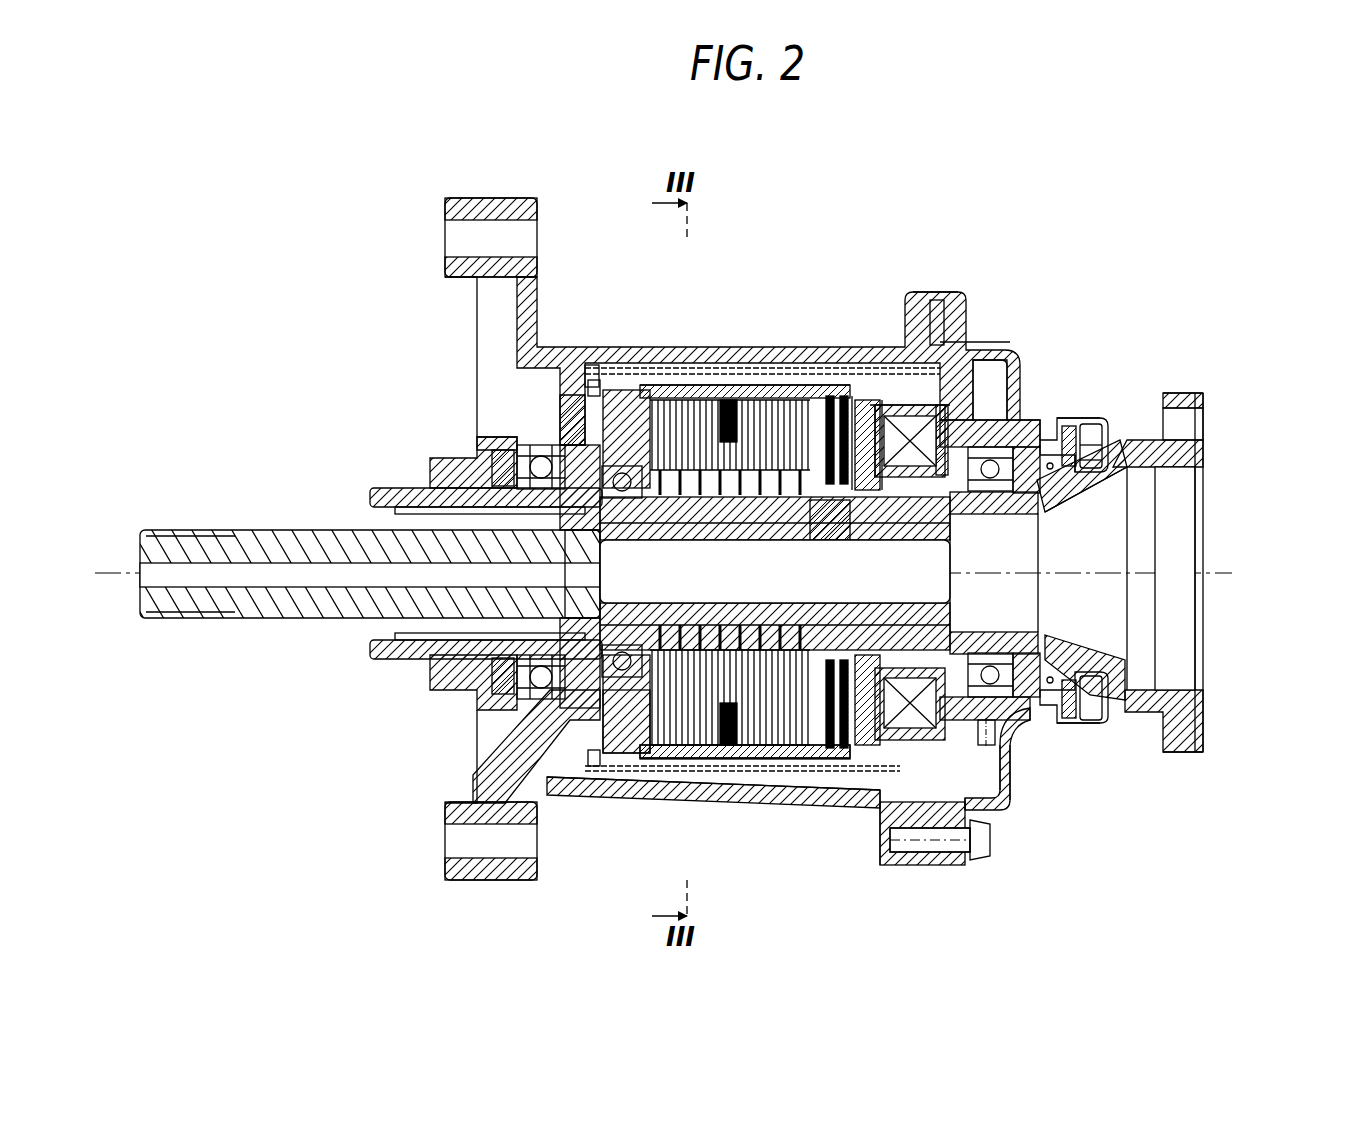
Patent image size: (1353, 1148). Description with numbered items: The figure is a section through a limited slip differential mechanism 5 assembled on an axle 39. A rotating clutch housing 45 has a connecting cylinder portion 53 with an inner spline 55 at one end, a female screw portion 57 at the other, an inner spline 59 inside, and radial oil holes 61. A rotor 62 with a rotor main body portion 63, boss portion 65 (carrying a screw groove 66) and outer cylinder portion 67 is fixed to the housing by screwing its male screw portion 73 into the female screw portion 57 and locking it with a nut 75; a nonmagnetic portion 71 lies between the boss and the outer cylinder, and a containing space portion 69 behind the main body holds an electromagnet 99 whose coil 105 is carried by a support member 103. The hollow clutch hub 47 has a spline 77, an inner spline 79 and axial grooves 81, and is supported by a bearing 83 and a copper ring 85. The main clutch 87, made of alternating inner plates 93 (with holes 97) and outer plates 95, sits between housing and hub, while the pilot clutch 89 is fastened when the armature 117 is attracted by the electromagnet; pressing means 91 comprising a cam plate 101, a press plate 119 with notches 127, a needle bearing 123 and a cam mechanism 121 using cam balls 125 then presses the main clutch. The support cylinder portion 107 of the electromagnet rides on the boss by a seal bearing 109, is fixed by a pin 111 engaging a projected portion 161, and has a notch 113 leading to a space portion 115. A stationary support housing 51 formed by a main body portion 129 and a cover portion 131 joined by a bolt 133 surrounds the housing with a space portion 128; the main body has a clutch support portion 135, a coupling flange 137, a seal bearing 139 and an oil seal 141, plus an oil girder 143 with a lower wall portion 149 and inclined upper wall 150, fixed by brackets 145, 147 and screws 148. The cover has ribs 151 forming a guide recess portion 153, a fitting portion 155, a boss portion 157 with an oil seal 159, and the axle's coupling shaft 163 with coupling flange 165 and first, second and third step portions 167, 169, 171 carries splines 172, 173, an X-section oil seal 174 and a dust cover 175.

The limited slip differential mechanism 5 is at (994, 190).
The axle 39 is at (1210, 407).
The clutch housing 45 is at (757, 352).
The clutch hub 47 is at (672, 640).
The support housing 51 is at (600, 342).
The connecting cylinder portion 53 is at (383, 491).
The inner spline 55 is at (402, 510).
The female screw portion 57 is at (1028, 385).
The inner spline 59 is at (770, 772).
The oil holes 61 is at (790, 385).
The rotor 62 is at (918, 300).
The rotor main body portion 63 is at (908, 300).
The boss portion 65 is at (962, 518).
The screw groove 66 is at (1000, 520).
The outer cylinder portion 67 is at (1085, 425).
The containing space portion 69 is at (990, 445).
The nonmagnetic portion 71 is at (850, 765).
The male screw portion 73 is at (905, 777).
The nut 75 is at (1042, 400).
The spline 77 is at (730, 645).
The inner spline 79 is at (640, 505).
The grooves 81 is at (875, 640).
The bearing 83 is at (620, 640).
The copper ring (bush) 85 is at (905, 505).
The main clutch 87 is at (710, 400).
The pilot clutch 89 is at (897, 405).
The pressing means 91 is at (770, 640).
The inner plates 93 is at (650, 398).
The outer plates 95 is at (690, 398).
The holes 97 is at (700, 505).
The electromagnet 99 is at (935, 802).
The cam plate 101 is at (820, 640).
The support member 103 is at (1095, 440).
The coil 105 is at (1065, 450).
The support cylinder portion 107 is at (1108, 445).
The seal bearing 109 is at (1100, 462).
The pin 111 is at (1003, 774).
The notch 113 is at (1102, 418).
The space portion 115 is at (1102, 470).
The armature 117 is at (862, 400).
The press plate 119 is at (830, 398).
The cam mechanism 121 is at (805, 505).
The needle bearing 123 is at (850, 505).
The cam balls 125 is at (960, 565).
The notches 127 is at (745, 505).
The space portion 128 is at (713, 793).
The main body portion 129 is at (680, 760).
The cover portion 131 is at (988, 772).
The bolt 133 is at (975, 858).
The clutch support portion 135 is at (560, 440).
The coupling flange 137 is at (462, 198).
The seal bearing 139 is at (545, 455).
The oil seal 141 is at (495, 468).
The oil girder 143 is at (765, 398).
The bracket 145 is at (590, 340).
The bracket 147 is at (938, 405).
The screws 148 is at (575, 400).
The lower wall portion 149 is at (845, 398).
The upper wall 150 is at (880, 400).
The ribs 151 is at (1012, 358).
The guide recess portion 153 is at (1058, 422).
The fitting portion 155 is at (1030, 714).
The boss portion 157 is at (1120, 470).
The oil seal 159 is at (1192, 397).
The projected portion 161 is at (1020, 762).
The coupling shaft 163 is at (1210, 615).
The coupling flange 165 is at (1187, 752).
The first step portion 167 is at (1075, 722).
The second step portion 169 is at (985, 800).
The third step portion 171 is at (870, 772).
The spline 172 is at (640, 768).
The spline 173 is at (172, 530).
The oil seal 174 is at (562, 551).
The dust cover 175 is at (1090, 490).